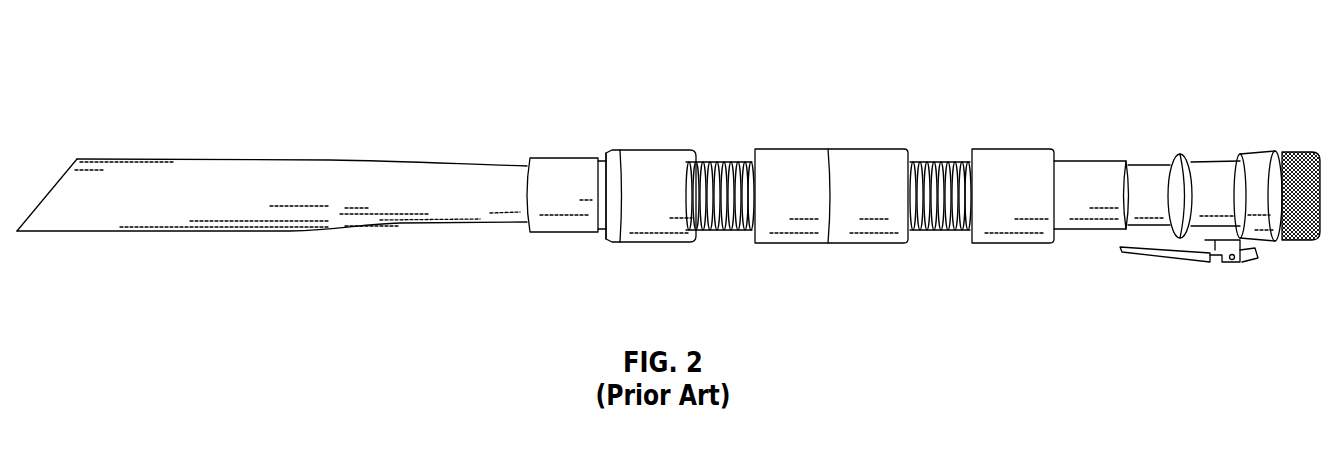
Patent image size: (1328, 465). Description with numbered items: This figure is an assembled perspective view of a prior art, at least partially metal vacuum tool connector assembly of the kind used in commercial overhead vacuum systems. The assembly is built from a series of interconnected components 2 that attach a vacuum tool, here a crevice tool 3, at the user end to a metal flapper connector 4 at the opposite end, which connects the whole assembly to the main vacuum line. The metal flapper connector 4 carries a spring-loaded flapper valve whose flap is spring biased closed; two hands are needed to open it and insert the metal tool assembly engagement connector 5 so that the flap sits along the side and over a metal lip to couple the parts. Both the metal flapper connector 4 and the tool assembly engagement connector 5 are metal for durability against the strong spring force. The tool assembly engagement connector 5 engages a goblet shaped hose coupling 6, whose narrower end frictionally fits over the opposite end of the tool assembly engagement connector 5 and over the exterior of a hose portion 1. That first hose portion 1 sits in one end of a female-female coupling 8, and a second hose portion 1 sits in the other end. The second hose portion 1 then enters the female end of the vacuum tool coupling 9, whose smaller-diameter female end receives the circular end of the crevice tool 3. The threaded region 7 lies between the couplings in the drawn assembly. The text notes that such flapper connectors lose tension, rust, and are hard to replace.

The hose portion 1 is at (726, 232).
The interconnected components 2 is at (866, 49).
The crevice tool 3 is at (383, 170).
The metal flapper connector 4 is at (1258, 158).
The tool assembly engagement connector 5 is at (1145, 173).
The goblet shaped hose coupling 6 is at (1013, 163).
The threaded portion 7 is at (942, 162).
The female-female coupling 8 is at (795, 162).
The vacuum tool coupling 9 is at (553, 162).